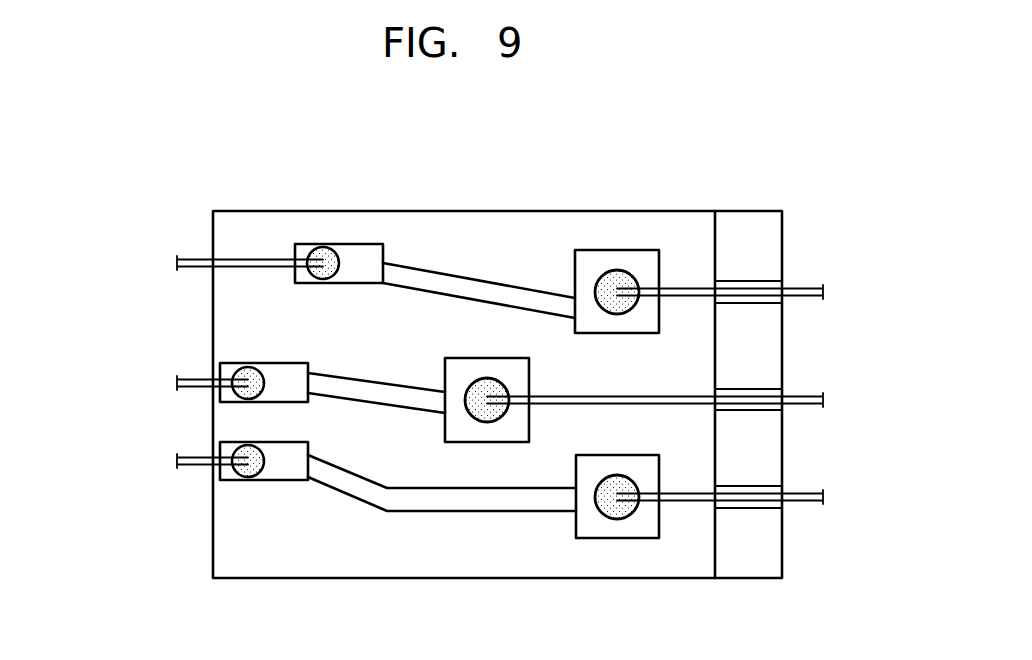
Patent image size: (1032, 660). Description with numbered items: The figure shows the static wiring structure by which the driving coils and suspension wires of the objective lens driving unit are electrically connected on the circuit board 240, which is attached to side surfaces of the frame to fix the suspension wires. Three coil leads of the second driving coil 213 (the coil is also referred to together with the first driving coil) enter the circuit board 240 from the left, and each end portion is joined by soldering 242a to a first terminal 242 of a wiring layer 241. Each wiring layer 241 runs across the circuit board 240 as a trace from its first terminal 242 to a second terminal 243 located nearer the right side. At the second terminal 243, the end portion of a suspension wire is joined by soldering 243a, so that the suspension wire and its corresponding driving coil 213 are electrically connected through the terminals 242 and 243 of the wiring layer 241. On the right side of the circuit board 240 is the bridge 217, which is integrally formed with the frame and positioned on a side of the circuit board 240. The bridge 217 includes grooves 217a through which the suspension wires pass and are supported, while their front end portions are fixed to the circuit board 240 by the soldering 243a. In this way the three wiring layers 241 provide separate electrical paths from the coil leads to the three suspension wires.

The circuit board 240 is at (533, 223).
The wiring layers 241 is at (462, 283).
The first terminals 242 is at (373, 249).
The soldering 242a is at (323, 247).
The second terminals 243 is at (655, 255).
The soldering 243a is at (617, 270).
The bridge 217 is at (748, 220).
The grooves 217a is at (768, 280).
The second driving coil 213 is at (193, 262).